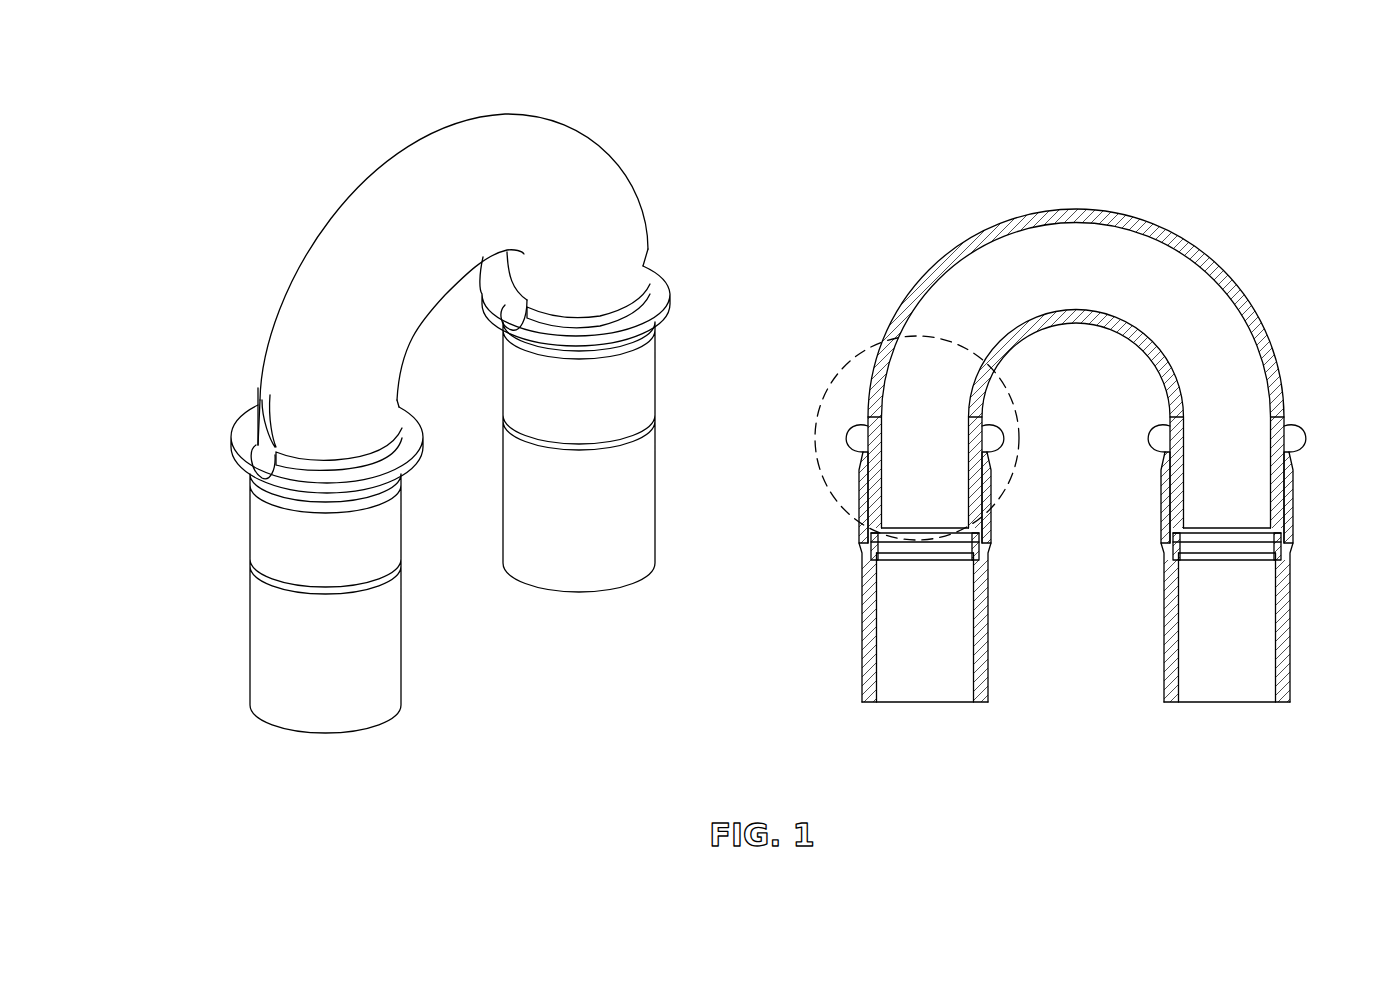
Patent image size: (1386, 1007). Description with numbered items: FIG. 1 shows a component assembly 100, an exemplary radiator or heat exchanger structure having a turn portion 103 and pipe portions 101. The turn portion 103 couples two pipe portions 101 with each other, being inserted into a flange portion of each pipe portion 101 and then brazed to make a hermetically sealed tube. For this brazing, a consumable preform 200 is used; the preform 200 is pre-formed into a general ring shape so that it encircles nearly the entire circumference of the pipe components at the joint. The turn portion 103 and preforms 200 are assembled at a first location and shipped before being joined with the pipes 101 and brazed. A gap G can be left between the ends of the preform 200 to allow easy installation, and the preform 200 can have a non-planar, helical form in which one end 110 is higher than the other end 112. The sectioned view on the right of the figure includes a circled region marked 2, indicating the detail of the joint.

The component assembly 100 is at (421, 98).
The pipe portion 101 is at (655, 481).
The turn portion 103 is at (556, 128).
The preform 200 is at (662, 258).
The end of the preform 110 is at (256, 461).
The end of the preform 112 is at (250, 471).
The gap G is at (259, 426).
The detail view of FIG. 2 is at (1008, 385).